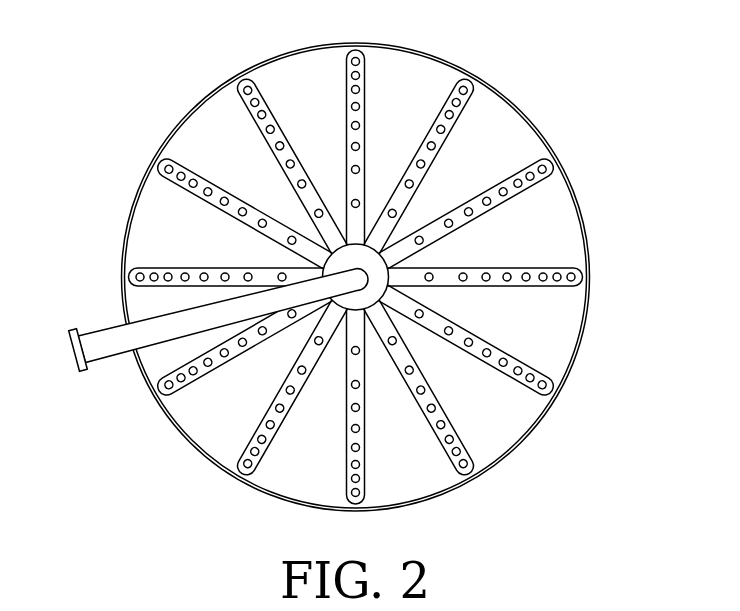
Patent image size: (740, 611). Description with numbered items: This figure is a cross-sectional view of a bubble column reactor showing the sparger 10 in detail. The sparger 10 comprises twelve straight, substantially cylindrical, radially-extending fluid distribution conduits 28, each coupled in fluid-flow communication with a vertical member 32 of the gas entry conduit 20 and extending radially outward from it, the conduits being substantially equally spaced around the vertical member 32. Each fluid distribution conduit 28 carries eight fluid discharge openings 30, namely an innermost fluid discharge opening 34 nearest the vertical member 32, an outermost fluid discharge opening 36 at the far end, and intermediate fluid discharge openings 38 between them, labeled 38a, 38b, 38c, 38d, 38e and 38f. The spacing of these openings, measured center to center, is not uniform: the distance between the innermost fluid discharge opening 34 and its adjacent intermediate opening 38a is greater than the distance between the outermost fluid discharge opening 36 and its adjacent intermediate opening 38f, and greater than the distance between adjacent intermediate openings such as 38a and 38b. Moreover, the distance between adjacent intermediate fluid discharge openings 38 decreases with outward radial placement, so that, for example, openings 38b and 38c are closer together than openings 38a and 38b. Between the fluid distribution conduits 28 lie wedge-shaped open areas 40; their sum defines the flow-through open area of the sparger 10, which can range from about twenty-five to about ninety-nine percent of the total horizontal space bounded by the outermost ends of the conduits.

The sparger 10 is at (243, 390).
The gas entry conduit 20 is at (118, 339).
The radially-extending fluid distribution conduit 28 is at (363, 70).
The fluid discharge opening 30 is at (466, 92).
The vertical member 32 is at (357, 268).
The innermost fluid discharge opening 34 is at (431, 281).
The outermost fluid discharge opening 36 is at (572, 279).
The intermediate fluid discharge openings 38 is at (564, 234).
The intermediate fluid discharge opening 38a is at (463, 277).
The intermediate fluid discharge opening 38b is at (487, 277).
The intermediate fluid discharge opening 38c is at (507, 277).
The intermediate fluid discharge opening 38d is at (526, 277).
The intermediate fluid discharge opening 38e is at (543, 277).
The intermediate fluid discharge opening 38f is at (557, 277).
The wedge-shaped open area 40 is at (481, 394).